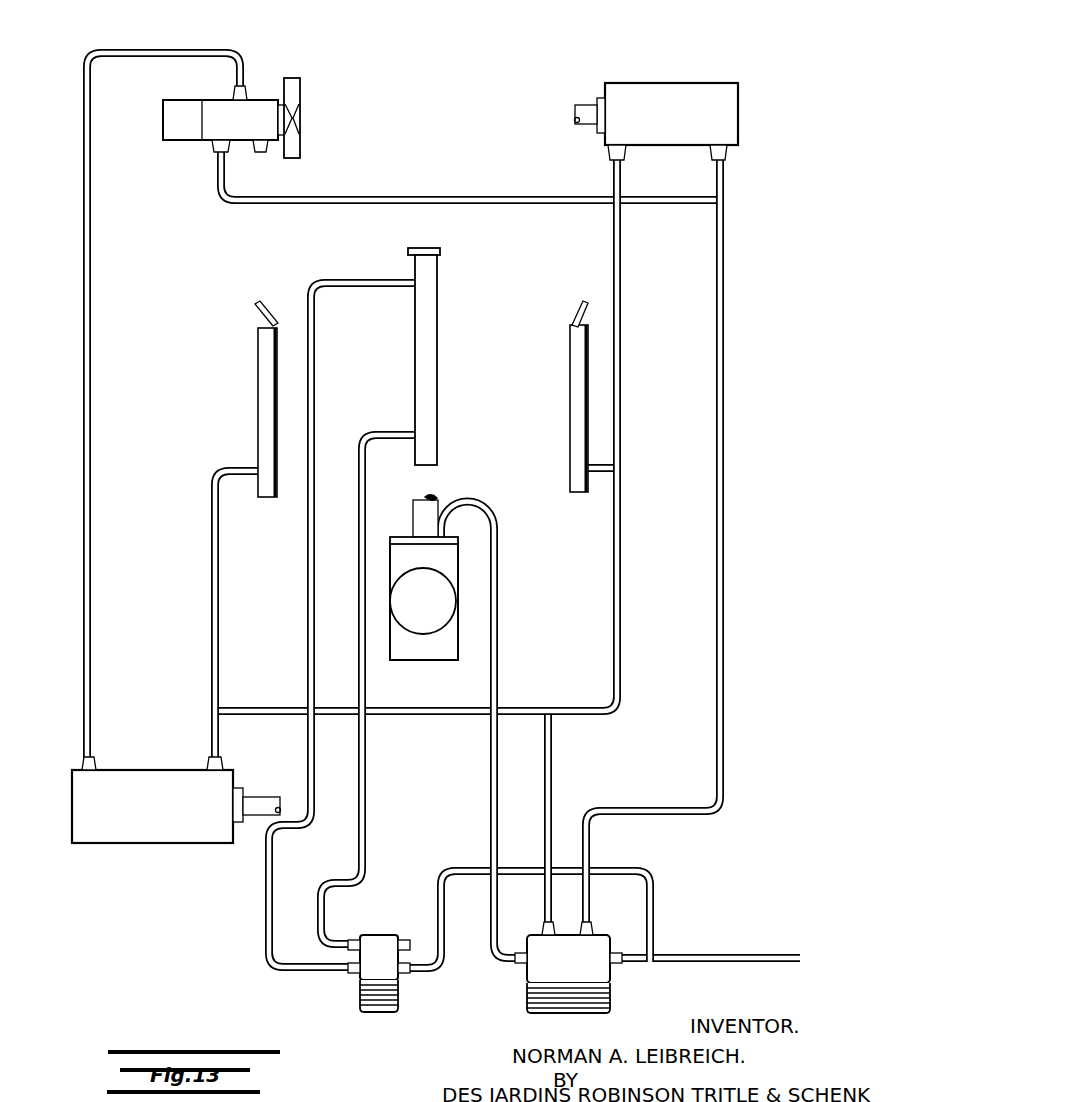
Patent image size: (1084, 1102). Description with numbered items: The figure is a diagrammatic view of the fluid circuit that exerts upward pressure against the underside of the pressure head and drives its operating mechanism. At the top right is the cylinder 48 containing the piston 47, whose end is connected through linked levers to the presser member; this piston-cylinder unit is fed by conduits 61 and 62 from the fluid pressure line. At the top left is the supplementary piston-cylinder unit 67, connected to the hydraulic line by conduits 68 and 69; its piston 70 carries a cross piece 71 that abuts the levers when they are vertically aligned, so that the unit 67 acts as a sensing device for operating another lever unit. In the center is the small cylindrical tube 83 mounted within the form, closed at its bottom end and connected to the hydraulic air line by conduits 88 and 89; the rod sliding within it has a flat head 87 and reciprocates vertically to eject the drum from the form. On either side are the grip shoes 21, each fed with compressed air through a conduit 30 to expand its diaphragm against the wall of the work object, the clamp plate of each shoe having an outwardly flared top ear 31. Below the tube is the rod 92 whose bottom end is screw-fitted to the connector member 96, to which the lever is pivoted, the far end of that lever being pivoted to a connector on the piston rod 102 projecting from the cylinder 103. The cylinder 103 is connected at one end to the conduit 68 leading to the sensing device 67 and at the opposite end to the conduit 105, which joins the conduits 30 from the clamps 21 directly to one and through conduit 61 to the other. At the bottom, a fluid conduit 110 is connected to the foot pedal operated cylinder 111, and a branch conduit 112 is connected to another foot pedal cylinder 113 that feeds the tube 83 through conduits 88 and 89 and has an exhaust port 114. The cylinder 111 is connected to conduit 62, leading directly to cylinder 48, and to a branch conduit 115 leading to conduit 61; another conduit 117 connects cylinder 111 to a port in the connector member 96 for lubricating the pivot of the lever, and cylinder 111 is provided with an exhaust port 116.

The grip shoe 21 is at (262, 389).
The conduit 30 is at (211, 474).
The outwardly flared top ear 31 is at (572, 314).
The piston 47 is at (580, 104).
The cylinder 48 is at (680, 92).
The conduit 61 is at (622, 240).
The conduit 62 is at (725, 181).
The supplementary piston-cylinder unit 67 is at (168, 120).
The conduit 68 is at (183, 49).
The conduit 69 is at (243, 206).
The piston 70 is at (298, 133).
The cross piece 71 is at (300, 86).
The cylindrical tube 83 is at (430, 372).
The flat head 87 is at (438, 246).
The conduit 88 is at (357, 288).
The conduit 89 is at (388, 432).
The rod 92 is at (441, 497).
The connector member 96 is at (445, 558).
The piston rod 102 is at (262, 800).
The cylinder 103 is at (144, 822).
The conduit 105 is at (212, 733).
The fluid conduit 110 is at (727, 963).
The foot pedal operated cylinder 111 is at (598, 973).
The branch conduit 112 is at (654, 895).
The foot pedal cylinder 113 is at (372, 970).
The exhaust port 114 is at (408, 938).
The branch conduit 115 is at (553, 786).
The exhaust port 116 is at (523, 965).
The conduit 117 is at (499, 642).